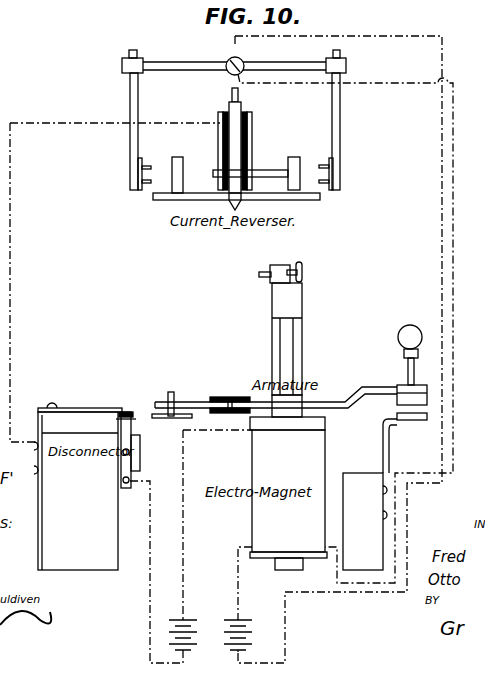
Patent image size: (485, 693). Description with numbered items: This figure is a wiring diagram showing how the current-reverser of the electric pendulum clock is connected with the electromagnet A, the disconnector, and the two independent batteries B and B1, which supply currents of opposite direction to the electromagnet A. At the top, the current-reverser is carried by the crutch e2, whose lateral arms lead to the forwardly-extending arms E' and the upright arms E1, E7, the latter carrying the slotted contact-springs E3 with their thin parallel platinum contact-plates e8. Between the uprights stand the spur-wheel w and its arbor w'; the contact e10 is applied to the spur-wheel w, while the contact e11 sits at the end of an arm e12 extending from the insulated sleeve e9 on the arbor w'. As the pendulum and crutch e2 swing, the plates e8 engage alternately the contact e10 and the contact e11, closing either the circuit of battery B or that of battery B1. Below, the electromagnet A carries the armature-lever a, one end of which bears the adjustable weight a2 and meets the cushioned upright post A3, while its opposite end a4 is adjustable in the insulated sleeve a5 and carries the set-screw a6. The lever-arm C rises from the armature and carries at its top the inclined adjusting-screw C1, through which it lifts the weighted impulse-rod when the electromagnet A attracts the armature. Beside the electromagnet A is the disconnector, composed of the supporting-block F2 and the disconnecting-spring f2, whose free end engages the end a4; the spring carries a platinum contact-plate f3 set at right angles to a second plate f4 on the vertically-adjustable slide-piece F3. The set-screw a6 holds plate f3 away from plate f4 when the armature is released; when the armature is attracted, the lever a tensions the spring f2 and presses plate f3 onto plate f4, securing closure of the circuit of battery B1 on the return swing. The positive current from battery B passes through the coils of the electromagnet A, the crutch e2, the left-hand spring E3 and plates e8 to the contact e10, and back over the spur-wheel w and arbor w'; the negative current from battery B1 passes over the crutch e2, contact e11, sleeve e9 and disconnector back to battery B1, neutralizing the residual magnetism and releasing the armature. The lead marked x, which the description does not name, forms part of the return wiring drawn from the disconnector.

The forwardly-extending arm E' is at (234, 78).
The upwardly-extending arm E1 is at (130, 143).
The upwardly-extending arm E7 is at (340, 122).
The slotted contact-spring E3 is at (140, 186).
The crutch e2 is at (238, 47).
The platinum contact-plate e8 is at (143, 168).
The insulated sleeve e9 is at (252, 123).
The platinum contact e10 is at (184, 150).
The platinum contact e11 is at (295, 164).
The arm e12 is at (250, 167).
The spur-wheel w is at (229, 204).
The arbor w' is at (253, 149).
The lever-arm C is at (293, 341).
The adjusting-screw C1 is at (303, 268).
The armature-lever a is at (470, 395).
The adjustable weight a2 is at (400, 340).
The end of armature-lever a4 is at (188, 402).
The sleeve a5 is at (235, 393).
The set-screw a6 is at (208, 521).
The electromagnet A is at (288, 493).
The upright post A3 is at (376, 494).
The supporting-block F2 is at (76, 486).
The disconnecting-spring f2 is at (98, 408).
The platinum contact-plate f3 is at (128, 410).
The platinum contact-plate f4 is at (121, 420).
The slide-piece F3 is at (132, 467).
The battery B is at (258, 635).
The battery B1 is at (165, 638).
The wire x is at (38, 420).